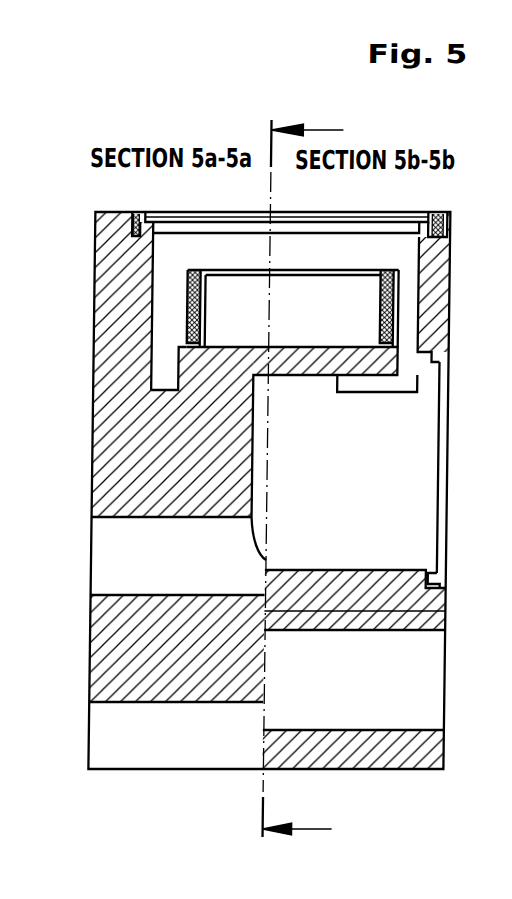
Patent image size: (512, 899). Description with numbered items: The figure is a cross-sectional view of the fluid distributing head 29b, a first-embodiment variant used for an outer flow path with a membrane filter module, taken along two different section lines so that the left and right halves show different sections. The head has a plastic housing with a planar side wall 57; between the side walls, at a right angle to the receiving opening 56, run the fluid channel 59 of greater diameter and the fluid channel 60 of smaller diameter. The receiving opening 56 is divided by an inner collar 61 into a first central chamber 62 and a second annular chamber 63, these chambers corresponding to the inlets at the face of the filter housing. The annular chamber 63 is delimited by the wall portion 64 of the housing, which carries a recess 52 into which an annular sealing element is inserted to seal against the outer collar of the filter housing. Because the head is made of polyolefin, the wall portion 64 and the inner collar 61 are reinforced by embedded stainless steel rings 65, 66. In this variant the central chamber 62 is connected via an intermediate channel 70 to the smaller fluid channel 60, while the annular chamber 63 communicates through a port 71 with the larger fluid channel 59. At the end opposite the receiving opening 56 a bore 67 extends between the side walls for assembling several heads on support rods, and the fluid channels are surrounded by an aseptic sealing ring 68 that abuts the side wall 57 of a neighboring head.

The fluid distributing head 29b is at (176, 124).
The recess 52 is at (172, 211).
The receiving opening 56 is at (360, 236).
The side wall 57 is at (80, 425).
The fluid channel 59 is at (388, 521).
The fluid channel 60 is at (121, 559).
The collar 61 is at (183, 330).
The first central chamber 62 is at (366, 275).
The second annular chamber 63 is at (168, 288).
The wall portion 64 is at (115, 316).
The stainless steel ring 65 is at (391, 281).
The stainless steel ring 66 is at (94, 232).
The bore 67 is at (418, 695).
The aseptic sealing ring 68 is at (447, 589).
The intermediate channel 70 is at (258, 466).
The port 71 is at (386, 383).